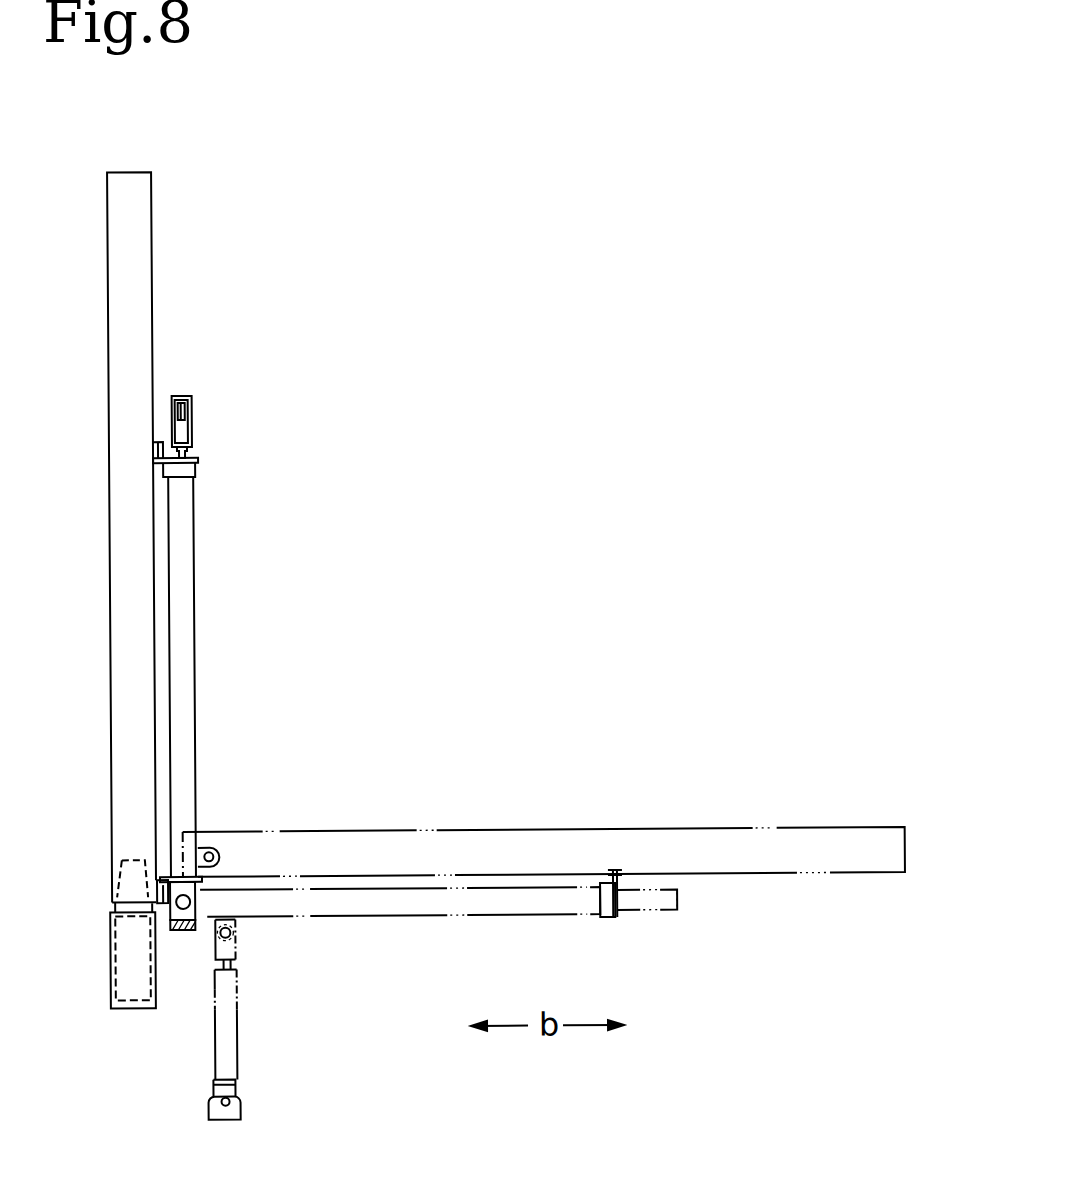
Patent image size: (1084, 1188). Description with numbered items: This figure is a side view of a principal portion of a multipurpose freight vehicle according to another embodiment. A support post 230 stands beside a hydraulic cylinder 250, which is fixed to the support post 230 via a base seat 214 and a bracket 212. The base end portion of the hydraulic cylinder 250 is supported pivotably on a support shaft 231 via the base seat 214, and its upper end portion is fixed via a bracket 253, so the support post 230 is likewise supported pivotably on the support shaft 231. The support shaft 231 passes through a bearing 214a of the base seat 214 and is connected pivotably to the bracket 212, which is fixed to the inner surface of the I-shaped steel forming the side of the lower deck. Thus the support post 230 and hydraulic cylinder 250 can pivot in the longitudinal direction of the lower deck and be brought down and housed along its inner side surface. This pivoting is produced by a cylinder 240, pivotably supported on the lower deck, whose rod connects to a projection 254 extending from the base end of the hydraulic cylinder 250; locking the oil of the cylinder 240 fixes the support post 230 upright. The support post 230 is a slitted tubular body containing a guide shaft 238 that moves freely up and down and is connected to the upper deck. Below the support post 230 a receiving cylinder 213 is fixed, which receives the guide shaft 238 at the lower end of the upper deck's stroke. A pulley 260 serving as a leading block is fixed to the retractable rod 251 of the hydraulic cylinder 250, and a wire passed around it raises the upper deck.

The support post 230 is at (141, 245).
The pulley 260 is at (196, 402).
The bracket 253 is at (159, 447).
The retractable rod 251 is at (202, 454).
The hydraulic cylinder 250 is at (192, 597).
The projection 254 is at (220, 847).
The bearing 214a is at (197, 888).
The bracket 212 is at (197, 913).
The base seat 214 is at (157, 892).
The guide shaft 238 is at (137, 858).
The receiving cylinder 213 is at (142, 966).
The support shaft 231 is at (182, 931).
The cylinder 240 is at (230, 1038).